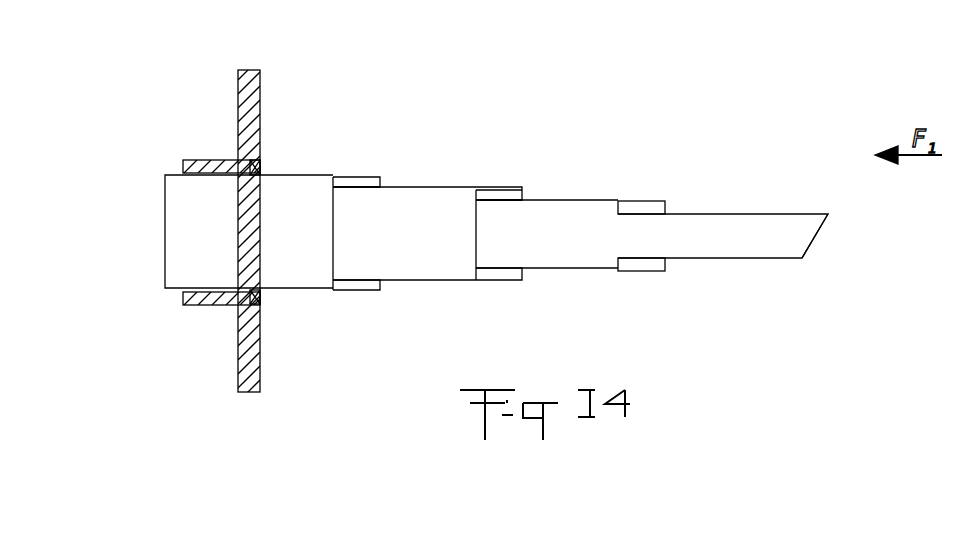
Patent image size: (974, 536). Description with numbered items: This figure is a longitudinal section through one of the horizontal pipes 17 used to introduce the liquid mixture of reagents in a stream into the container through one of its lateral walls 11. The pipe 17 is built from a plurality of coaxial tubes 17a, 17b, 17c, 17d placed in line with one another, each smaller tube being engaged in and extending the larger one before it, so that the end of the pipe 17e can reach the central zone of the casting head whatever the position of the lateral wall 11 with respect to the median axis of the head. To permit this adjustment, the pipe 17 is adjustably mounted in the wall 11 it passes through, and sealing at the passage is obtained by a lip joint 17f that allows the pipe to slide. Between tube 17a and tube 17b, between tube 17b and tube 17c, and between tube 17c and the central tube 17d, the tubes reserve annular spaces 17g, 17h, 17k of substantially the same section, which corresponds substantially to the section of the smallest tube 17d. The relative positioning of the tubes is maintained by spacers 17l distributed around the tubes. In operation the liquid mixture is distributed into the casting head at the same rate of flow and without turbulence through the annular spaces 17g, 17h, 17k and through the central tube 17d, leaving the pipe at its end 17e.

The lateral wall 11 is at (242, 137).
The horizontal pipe 17 is at (477, 176).
The coaxial tube 17a is at (318, 176).
The coaxial tube 17b is at (422, 187).
The coaxial tube 17c is at (567, 200).
The central tube 17d is at (750, 213).
The end of the pipe 17e is at (816, 240).
The lip joint 17f is at (260, 168).
The annular space 17g is at (357, 180).
The annular space 17h is at (525, 195).
The annular space 17k is at (665, 208).
The spacers 17l is at (487, 195).